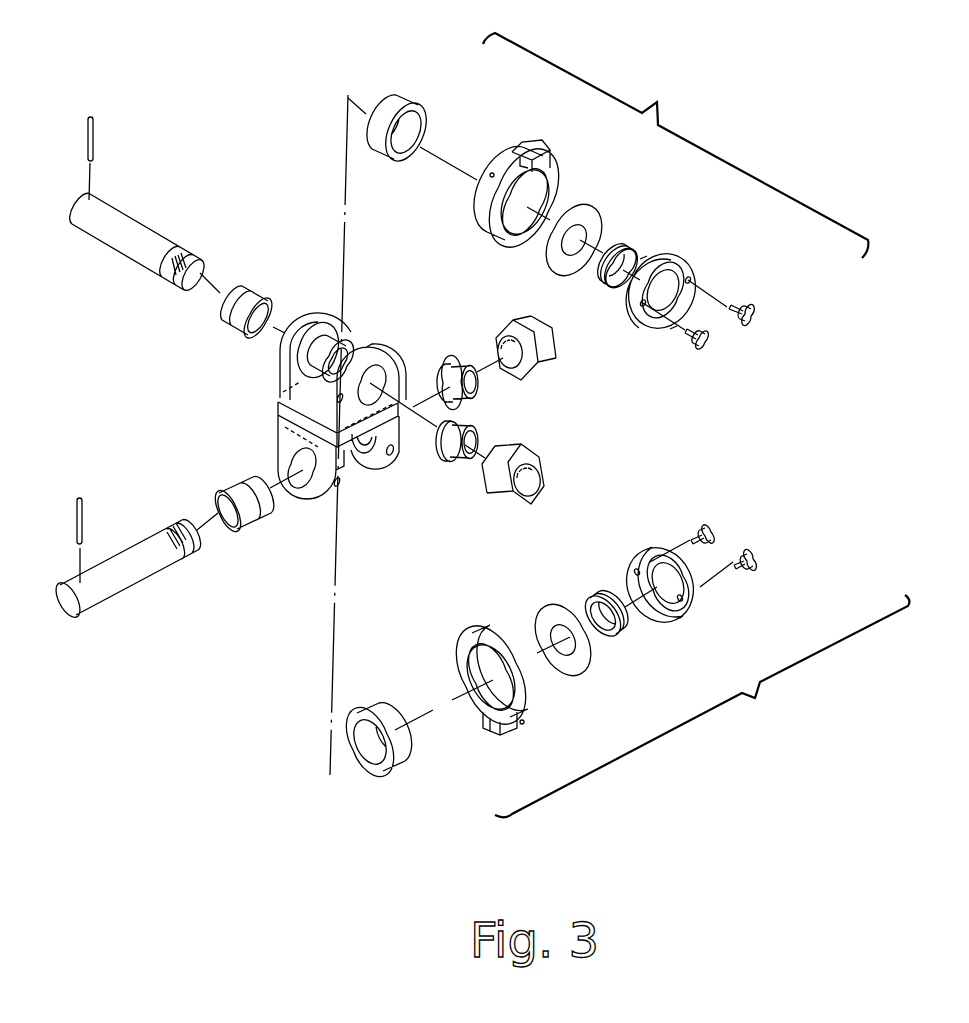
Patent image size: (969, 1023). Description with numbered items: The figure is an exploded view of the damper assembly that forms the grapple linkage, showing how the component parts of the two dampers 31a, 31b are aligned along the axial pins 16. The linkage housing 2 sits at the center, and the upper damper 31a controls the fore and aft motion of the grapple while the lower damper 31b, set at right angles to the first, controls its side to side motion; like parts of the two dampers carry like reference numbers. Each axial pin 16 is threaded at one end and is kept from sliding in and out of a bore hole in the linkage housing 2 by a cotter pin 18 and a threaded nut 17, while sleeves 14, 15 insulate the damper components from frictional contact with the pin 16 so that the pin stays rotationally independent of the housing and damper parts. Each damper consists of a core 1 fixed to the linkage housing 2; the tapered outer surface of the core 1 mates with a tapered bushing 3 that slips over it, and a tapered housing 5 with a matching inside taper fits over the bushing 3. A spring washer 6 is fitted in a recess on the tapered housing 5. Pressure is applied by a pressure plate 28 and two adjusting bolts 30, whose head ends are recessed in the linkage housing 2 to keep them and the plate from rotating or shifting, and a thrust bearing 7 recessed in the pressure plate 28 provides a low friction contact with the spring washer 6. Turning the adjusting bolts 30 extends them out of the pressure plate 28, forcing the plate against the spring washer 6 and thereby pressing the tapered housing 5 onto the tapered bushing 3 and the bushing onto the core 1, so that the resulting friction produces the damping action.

The core 1 is at (360, 334).
The linkage housing 2 is at (393, 345).
The tapered bushing 3 is at (422, 92).
The tapered housing 5 is at (543, 137).
The spring washer 6 is at (597, 205).
The thrust bearing 7 is at (635, 240).
The sleeve 14 is at (482, 392).
The sleeve 15 is at (233, 330).
The axial pin 16 is at (123, 253).
The threaded nut 17 is at (537, 373).
The cotter pin 18 is at (100, 122).
The pressure plate 28 is at (690, 253).
The adjusting bolt 30 is at (757, 303).
The upper damper 31a is at (675, 145).
The lower damper 31b is at (702, 706).